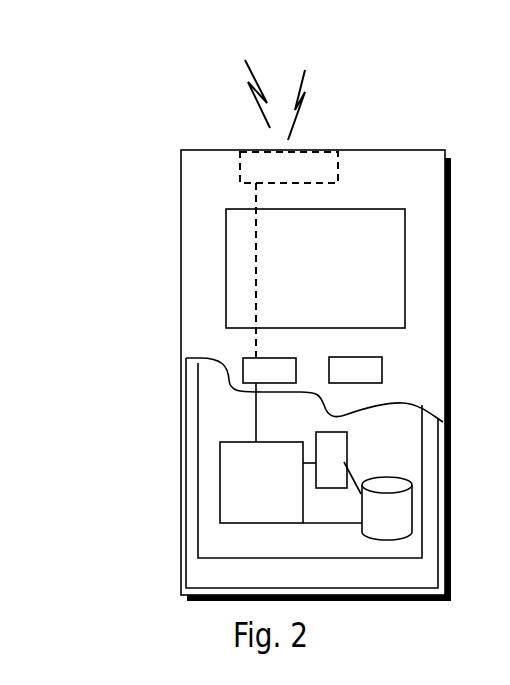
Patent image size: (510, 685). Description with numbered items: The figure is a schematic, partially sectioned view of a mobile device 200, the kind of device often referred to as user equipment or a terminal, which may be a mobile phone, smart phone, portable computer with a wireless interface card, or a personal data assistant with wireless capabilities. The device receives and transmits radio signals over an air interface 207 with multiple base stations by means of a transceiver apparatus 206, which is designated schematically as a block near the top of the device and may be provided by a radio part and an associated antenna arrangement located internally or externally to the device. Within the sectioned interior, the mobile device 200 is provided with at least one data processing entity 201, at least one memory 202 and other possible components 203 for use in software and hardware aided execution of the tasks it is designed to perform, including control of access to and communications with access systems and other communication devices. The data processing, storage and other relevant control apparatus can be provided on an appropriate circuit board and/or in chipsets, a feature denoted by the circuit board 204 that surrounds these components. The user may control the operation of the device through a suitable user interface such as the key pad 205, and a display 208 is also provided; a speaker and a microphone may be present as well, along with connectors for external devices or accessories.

The mobile device 200 is at (183, 187).
The data processing entity 201 is at (227, 468).
The memory 202 is at (382, 520).
The other possible components 203 is at (332, 447).
The circuit board and/or chipsets 204 is at (220, 543).
The key pad 205 is at (248, 372).
The transceiver apparatus 206 is at (330, 161).
The air interface 207 is at (321, 88).
The display 208 is at (242, 258).